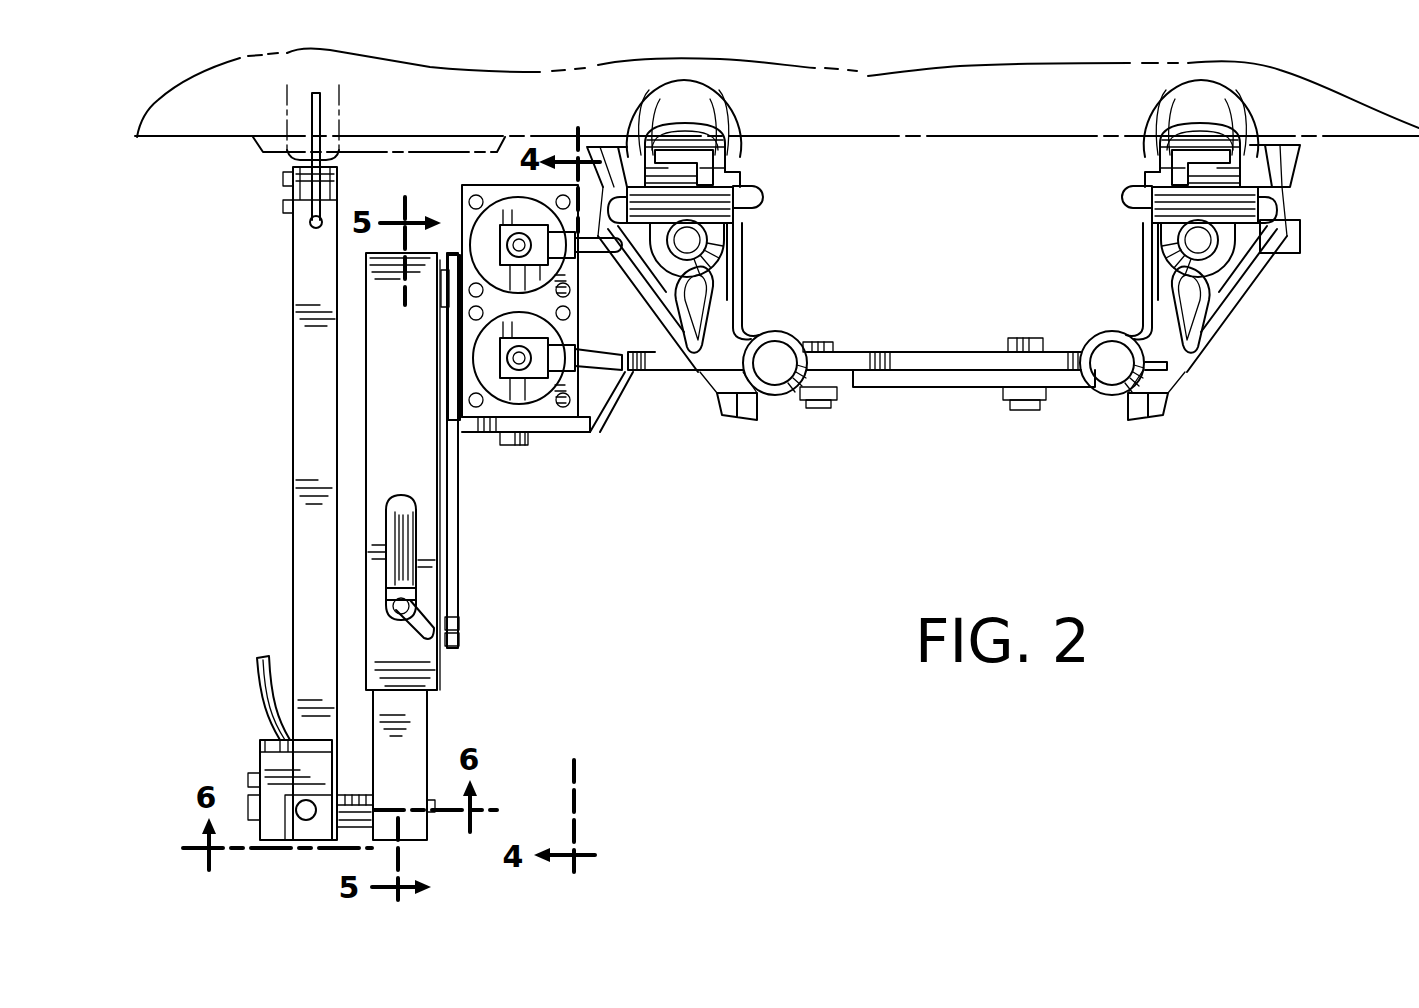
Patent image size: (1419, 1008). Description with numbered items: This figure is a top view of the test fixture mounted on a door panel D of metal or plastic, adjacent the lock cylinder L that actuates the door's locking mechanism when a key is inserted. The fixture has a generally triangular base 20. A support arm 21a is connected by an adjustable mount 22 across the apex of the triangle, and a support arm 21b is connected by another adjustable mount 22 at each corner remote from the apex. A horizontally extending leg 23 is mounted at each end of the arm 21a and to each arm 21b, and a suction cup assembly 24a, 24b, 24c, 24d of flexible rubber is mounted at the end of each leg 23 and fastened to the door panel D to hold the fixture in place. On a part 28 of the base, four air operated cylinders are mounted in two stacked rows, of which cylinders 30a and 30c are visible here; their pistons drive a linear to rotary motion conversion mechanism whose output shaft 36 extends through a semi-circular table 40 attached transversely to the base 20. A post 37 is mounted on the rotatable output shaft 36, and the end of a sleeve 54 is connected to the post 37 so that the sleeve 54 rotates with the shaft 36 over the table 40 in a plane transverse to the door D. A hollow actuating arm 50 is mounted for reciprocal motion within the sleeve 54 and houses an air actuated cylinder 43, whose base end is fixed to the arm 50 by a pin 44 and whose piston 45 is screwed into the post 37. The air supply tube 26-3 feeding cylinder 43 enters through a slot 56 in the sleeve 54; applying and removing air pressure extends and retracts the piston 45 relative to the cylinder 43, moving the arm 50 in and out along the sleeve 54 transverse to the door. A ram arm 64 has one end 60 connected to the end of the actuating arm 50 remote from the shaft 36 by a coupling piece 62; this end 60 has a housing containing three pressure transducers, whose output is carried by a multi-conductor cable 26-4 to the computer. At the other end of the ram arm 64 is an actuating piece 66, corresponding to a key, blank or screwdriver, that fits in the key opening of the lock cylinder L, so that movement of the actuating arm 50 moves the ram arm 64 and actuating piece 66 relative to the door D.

The base 20 is at (888, 362).
The support arm 21a is at (1114, 365).
The support arm 21b is at (773, 372).
The adjustable mount 22 is at (958, 370).
The horizontally extending leg 23 is at (732, 310).
The suction cup assembly 24a is at (1215, 100).
The suction cup assembly 24b is at (1268, 165).
The suction cup assembly 24c is at (612, 152).
The suction cup assembly 24d is at (688, 93).
The air supply tube 26-3 is at (420, 617).
The multi-conductor cable 26-4 is at (262, 700).
The part of the base 28 is at (560, 433).
The air operated cylinder 30a is at (497, 218).
The air operated cylinder 30c is at (535, 388).
The output shaft 36 is at (441, 292).
The post 37 is at (380, 374).
The semi-circular table 40 is at (452, 590).
The air actuated cylinder 43 is at (385, 578).
The pin 44 is at (442, 818).
The piston 45 is at (400, 503).
The hollow actuating arm 50 is at (418, 712).
The sleeve 54 is at (428, 470).
The slot 56 is at (407, 535).
The end of the ram arm 60 is at (300, 775).
The coupling piece 62 is at (345, 805).
The ram arm 64 is at (290, 446).
The actuating piece 66 is at (320, 122).
The door panel D is at (905, 82).
The lock cylinder L is at (305, 99).